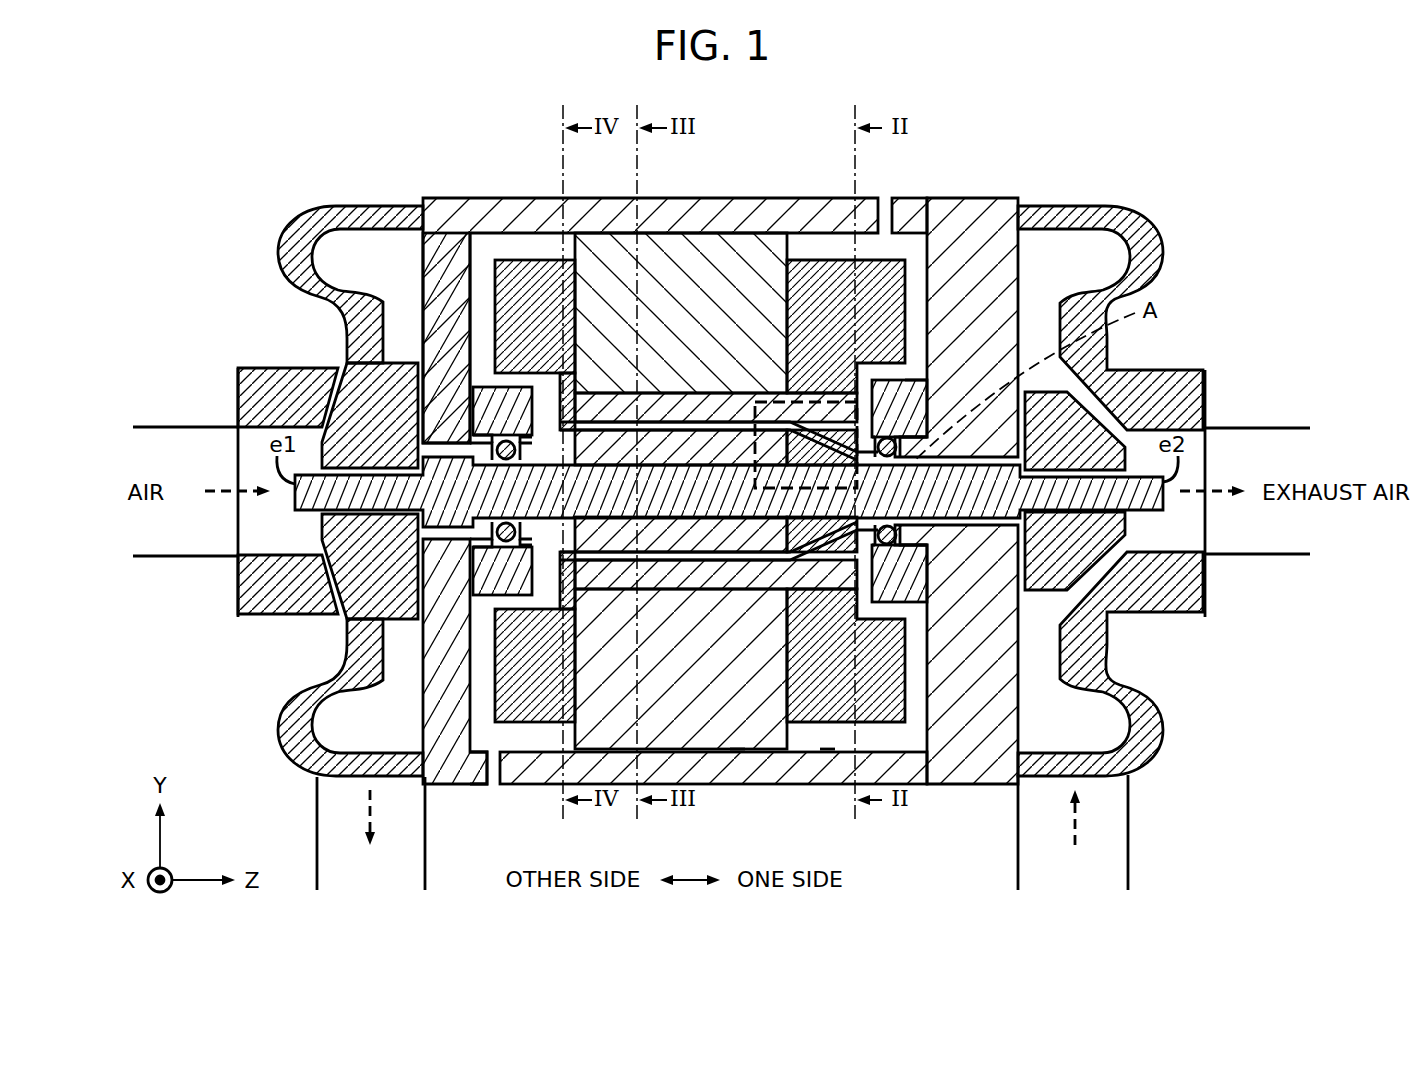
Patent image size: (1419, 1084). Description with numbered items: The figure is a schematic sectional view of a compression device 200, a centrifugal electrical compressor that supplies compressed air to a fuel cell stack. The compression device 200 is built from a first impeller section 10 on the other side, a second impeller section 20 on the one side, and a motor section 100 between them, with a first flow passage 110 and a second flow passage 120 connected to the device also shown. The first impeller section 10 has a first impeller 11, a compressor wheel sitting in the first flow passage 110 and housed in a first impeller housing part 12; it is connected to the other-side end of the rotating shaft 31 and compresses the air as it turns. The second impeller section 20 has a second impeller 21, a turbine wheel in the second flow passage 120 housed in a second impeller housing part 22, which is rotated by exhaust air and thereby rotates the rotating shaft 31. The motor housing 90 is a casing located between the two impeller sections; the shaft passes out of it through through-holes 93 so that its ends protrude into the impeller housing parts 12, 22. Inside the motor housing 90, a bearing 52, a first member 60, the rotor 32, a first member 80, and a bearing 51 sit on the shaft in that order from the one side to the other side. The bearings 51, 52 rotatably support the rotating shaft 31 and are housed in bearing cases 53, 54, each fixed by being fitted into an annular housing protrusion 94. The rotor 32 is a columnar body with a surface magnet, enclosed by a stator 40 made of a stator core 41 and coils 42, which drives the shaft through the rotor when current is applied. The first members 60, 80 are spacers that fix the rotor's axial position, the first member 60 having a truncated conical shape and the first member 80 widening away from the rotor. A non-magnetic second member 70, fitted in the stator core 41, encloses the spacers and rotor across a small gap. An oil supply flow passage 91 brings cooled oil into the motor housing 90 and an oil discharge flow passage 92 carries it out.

The first impeller section 10 is at (257, 236).
The first impeller 11 is at (340, 425).
The first impeller housing part 12 is at (290, 735).
The second impeller section 20 is at (1178, 235).
The second impeller 21 is at (1108, 378).
The second impeller housing part 22 is at (1140, 758).
The rotating shaft 31 is at (1163, 502).
The rotor 32 is at (697, 440).
The stator 40 is at (700, 440).
The stator core 41 is at (735, 300).
The coils 42 is at (790, 290).
The bearing 51 is at (470, 432).
The bearing 52 is at (890, 400).
The bearing case 53 is at (497, 440).
The bearing case 54 is at (900, 448).
The first member 60 is at (828, 740).
The second member 70 is at (737, 740).
The first member 80 is at (513, 756).
The motor housing 90 is at (1018, 198).
The oil supply flow passage 91 is at (912, 380).
The oil discharge flow passage 92 is at (487, 786).
The through-hole 93 is at (490, 440).
The annular housing protrusion 94 is at (508, 442).
The motor section 100 is at (988, 176).
The first flow passage 110 is at (150, 428).
The second flow passage 120 is at (1275, 427).
The compression device 200 is at (1190, 163).